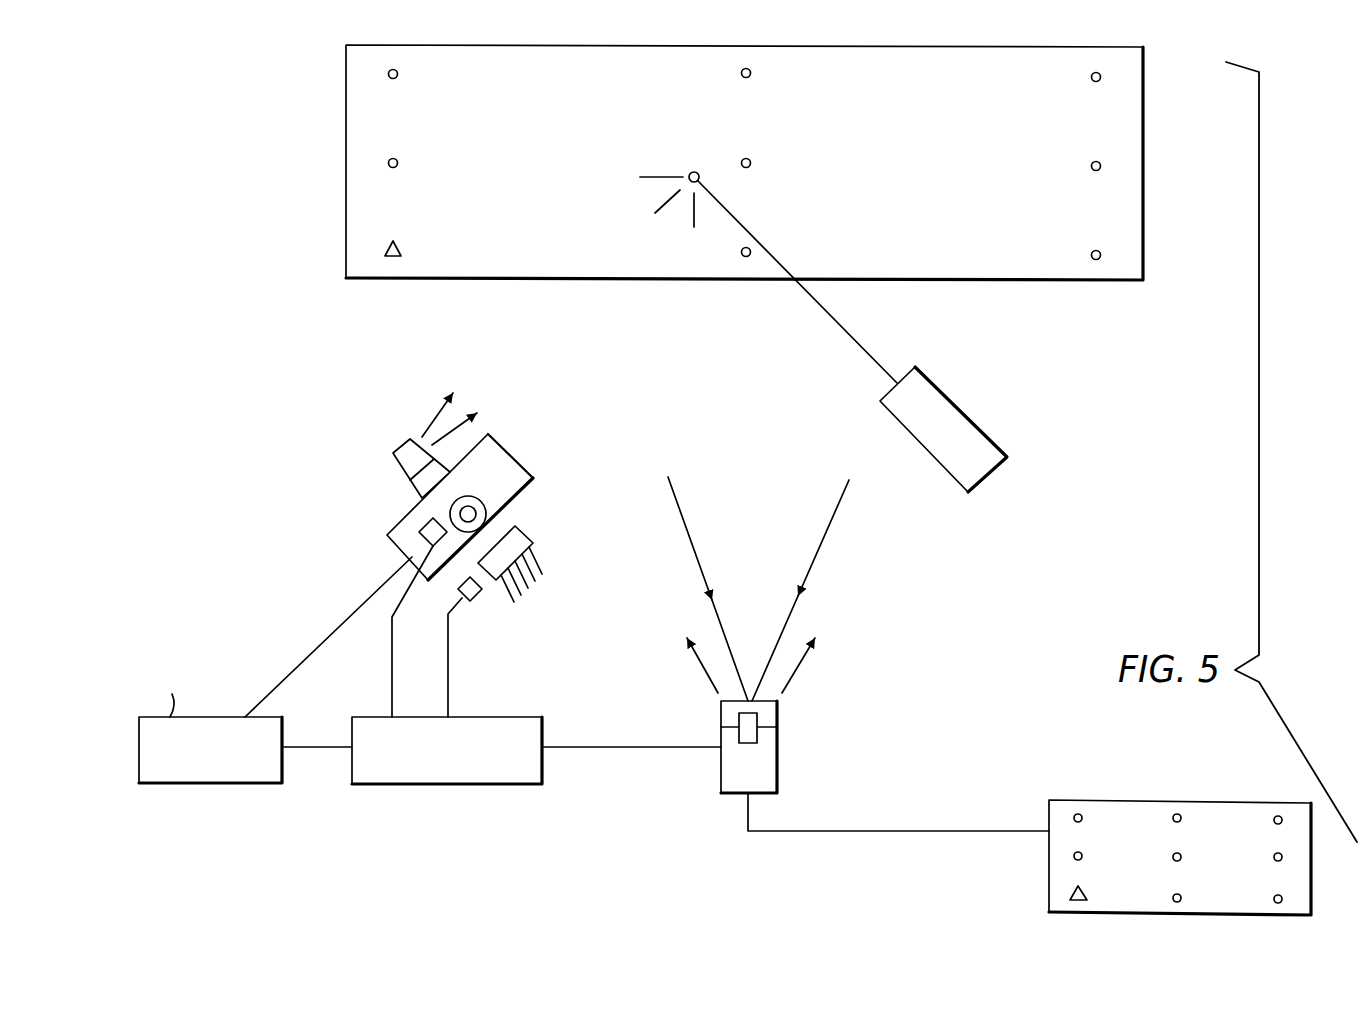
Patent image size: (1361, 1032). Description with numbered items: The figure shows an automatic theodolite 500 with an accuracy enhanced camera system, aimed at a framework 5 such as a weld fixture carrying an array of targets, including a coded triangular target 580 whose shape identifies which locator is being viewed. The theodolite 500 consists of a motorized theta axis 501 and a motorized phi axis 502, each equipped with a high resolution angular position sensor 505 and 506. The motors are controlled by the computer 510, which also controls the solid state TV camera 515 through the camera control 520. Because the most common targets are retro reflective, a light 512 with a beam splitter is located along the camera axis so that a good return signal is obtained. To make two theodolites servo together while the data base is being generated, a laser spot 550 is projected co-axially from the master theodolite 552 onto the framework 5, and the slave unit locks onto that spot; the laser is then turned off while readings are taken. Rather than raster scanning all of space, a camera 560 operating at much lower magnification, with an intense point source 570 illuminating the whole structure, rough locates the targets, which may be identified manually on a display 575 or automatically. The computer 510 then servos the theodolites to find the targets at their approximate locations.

The framework 5 is at (342, 76).
The triangular target 580 is at (393, 258).
The laser spot 550 is at (693, 171).
The master theodolite 552 is at (970, 417).
The solid state TV camera 515 is at (397, 522).
The light with beam splitter 512 is at (392, 460).
The angular position sensor 505 is at (489, 500).
The motorized theta axis 501 is at (419, 533).
The angular position sensor 506 is at (536, 531).
The motorized phi axis 502 is at (480, 600).
The automatic theodolite 500 is at (357, 634).
The camera control 520 is at (243, 785).
The computer 510 is at (543, 739).
The camera 560 is at (721, 767).
The intense point source 570 is at (758, 740).
The display 575 is at (1049, 876).